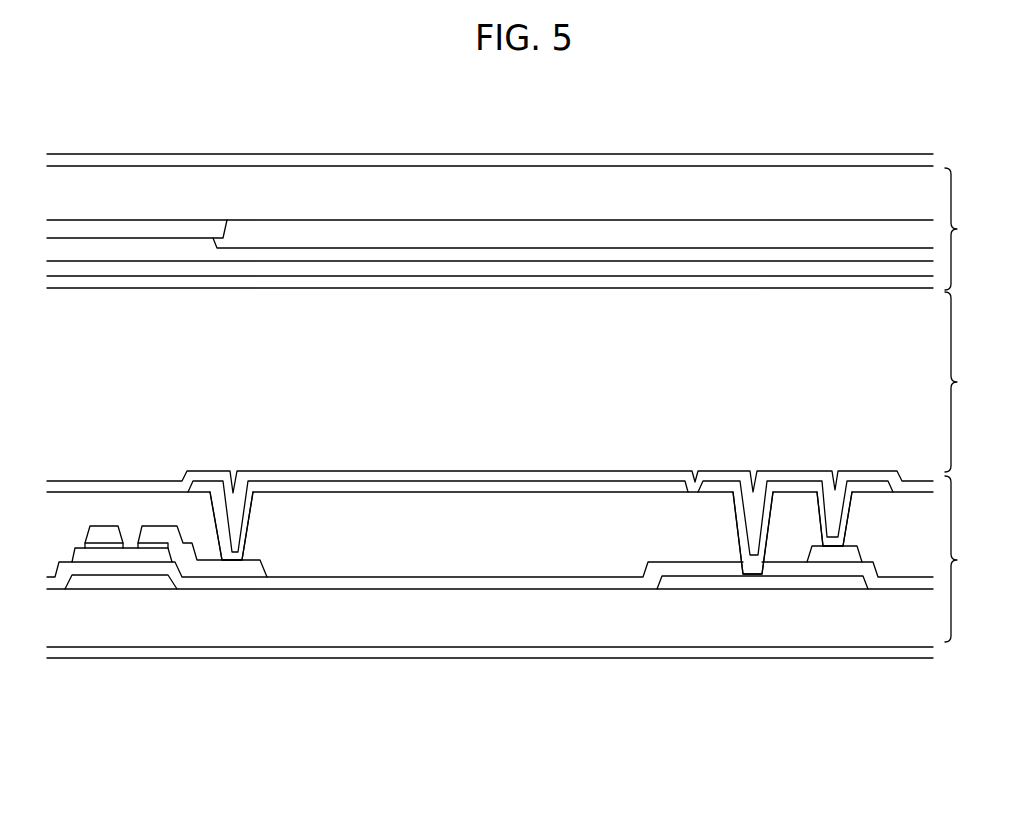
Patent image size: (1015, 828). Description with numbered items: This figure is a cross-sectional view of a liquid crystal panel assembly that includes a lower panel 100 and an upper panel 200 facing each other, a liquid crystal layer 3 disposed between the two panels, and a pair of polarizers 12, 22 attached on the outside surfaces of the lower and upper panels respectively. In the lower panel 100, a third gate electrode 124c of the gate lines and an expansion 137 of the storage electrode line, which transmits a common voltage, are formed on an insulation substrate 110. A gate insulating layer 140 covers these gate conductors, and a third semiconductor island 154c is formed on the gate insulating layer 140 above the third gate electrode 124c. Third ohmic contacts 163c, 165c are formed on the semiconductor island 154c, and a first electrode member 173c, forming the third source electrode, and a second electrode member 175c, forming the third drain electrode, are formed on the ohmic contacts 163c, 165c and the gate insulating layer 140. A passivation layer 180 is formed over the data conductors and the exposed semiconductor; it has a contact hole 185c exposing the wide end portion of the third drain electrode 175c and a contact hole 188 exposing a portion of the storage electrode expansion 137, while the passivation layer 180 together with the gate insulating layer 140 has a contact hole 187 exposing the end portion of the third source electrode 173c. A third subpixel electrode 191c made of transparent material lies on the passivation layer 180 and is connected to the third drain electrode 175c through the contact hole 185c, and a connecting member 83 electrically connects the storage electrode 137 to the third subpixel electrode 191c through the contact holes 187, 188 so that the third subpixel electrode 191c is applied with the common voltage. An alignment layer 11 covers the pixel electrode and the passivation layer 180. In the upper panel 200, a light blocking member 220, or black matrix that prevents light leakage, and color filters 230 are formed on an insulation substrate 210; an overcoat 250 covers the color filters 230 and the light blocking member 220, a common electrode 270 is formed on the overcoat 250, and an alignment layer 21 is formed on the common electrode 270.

The polarizer 22 is at (923, 161).
The upper panel 200 is at (967, 229).
The insulation substrate 210 is at (426, 190).
The light blocking member 220 is at (148, 232).
The color filter 230 is at (530, 232).
The overcoat 250 is at (637, 253).
The common electrode 270 is at (744, 268).
The alignment layer 21 is at (655, 282).
The liquid crystal layer 3 is at (956, 382).
The lower panel 100 is at (966, 559).
The insulation substrate 110 is at (363, 622).
The polarizer 12 is at (923, 652).
The third gate electrode 124c is at (152, 580).
The expansion 137 is at (733, 585).
The gate insulating layer 140 is at (434, 585).
The third semiconductor island 154c is at (92, 553).
The third ohmic contact 163c is at (110, 547).
The third ohmic contact 165c is at (158, 547).
The first electrode member 173c is at (100, 535).
The second electrode member 175c is at (150, 535).
The passivation layer 180 is at (505, 545).
The contact hole 185c is at (247, 527).
The third subpixel electrode 191c is at (571, 487).
The connecting member 83 is at (790, 485).
The contact hole 188 is at (733, 528).
The contact hole 187 is at (862, 480).
The alignment layer 11 is at (653, 470).